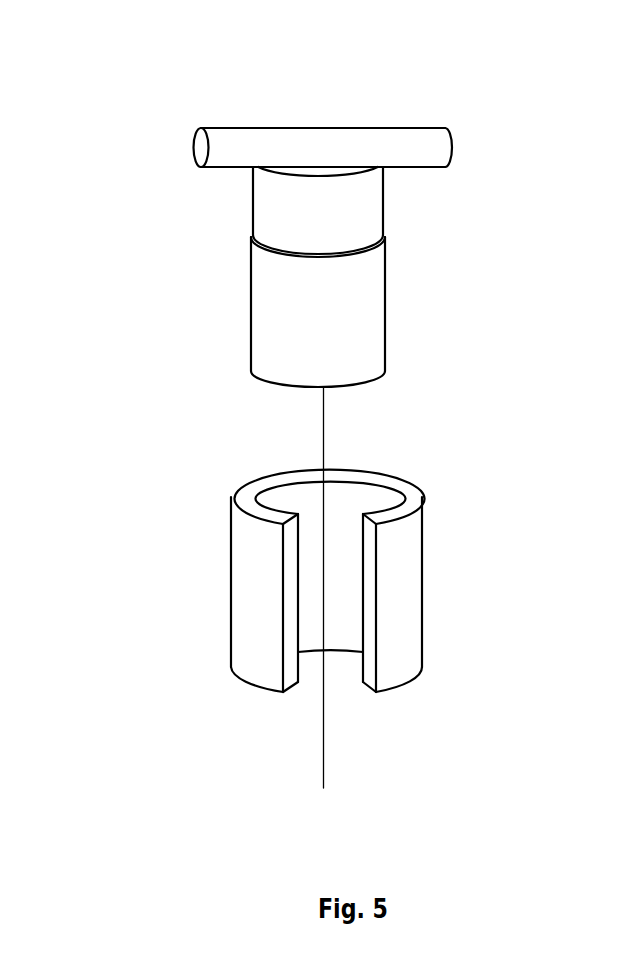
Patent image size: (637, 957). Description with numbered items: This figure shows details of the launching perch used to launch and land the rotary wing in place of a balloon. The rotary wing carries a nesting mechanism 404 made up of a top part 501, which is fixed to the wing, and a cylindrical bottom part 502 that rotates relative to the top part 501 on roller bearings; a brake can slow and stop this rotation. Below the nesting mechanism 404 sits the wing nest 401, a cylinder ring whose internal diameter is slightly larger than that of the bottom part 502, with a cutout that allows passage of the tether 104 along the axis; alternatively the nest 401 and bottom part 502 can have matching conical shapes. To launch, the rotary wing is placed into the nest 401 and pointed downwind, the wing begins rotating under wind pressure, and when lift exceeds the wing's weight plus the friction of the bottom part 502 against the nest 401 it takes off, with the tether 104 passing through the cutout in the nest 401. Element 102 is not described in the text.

The rod 102 is at (337, 138).
The tether 104 is at (324, 748).
The wing nest 401 is at (412, 572).
The nesting mechanism 404 is at (127, 249).
The top part 501 is at (372, 223).
The cylindrical bottom part 502 is at (378, 315).